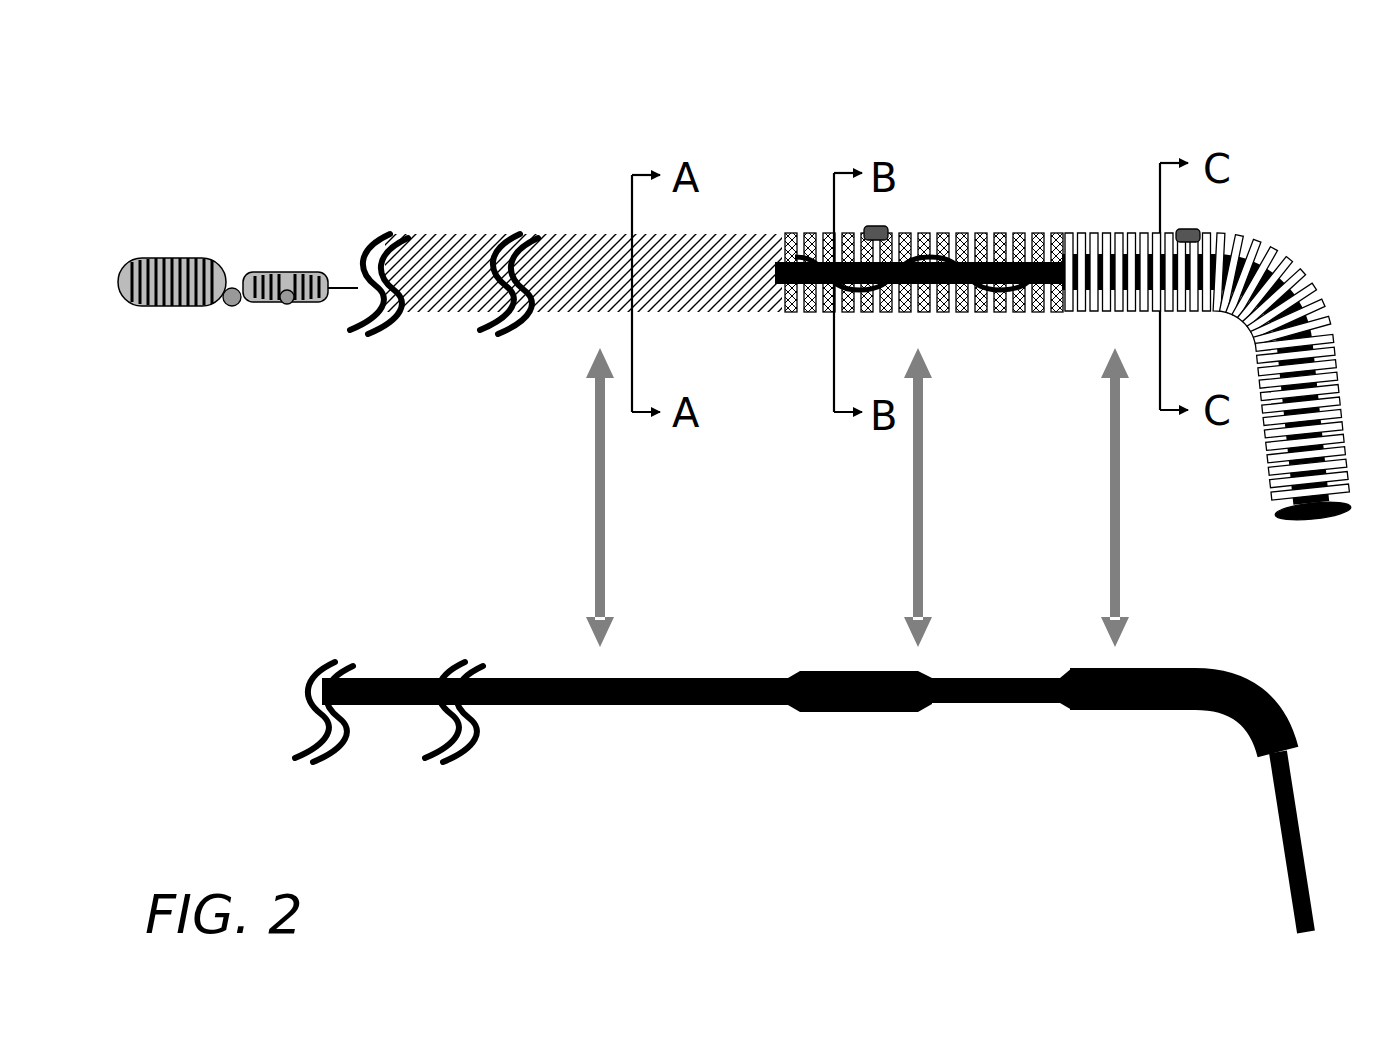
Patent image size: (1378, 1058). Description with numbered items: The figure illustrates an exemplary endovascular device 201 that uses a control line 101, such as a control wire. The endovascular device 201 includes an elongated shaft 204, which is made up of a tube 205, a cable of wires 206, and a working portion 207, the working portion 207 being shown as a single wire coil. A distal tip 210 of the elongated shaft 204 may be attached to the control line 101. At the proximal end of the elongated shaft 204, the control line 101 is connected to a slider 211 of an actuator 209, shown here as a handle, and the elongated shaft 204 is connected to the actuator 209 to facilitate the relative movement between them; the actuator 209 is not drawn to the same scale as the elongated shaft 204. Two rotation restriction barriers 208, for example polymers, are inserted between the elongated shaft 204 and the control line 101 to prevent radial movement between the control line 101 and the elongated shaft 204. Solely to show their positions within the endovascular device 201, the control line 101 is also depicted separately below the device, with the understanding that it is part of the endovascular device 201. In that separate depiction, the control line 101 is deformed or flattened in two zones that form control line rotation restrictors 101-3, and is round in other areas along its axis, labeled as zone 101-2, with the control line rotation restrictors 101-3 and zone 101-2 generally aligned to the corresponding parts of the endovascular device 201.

The endovascular device 201 is at (460, 186).
The elongated shaft 204 is at (1284, 50).
The tube 205 is at (707, 232).
The cable of wires 206 is at (1010, 233).
The working portion 207 is at (1330, 296).
The rotation restriction barriers 208 is at (877, 228).
The actuator 209 is at (172, 252).
The distal tip 210 is at (1310, 532).
The slider 211 is at (268, 310).
The control line 101 is at (486, 630).
The zone 101-2 is at (578, 722).
The control line rotation restrictors 101-3 is at (868, 722).